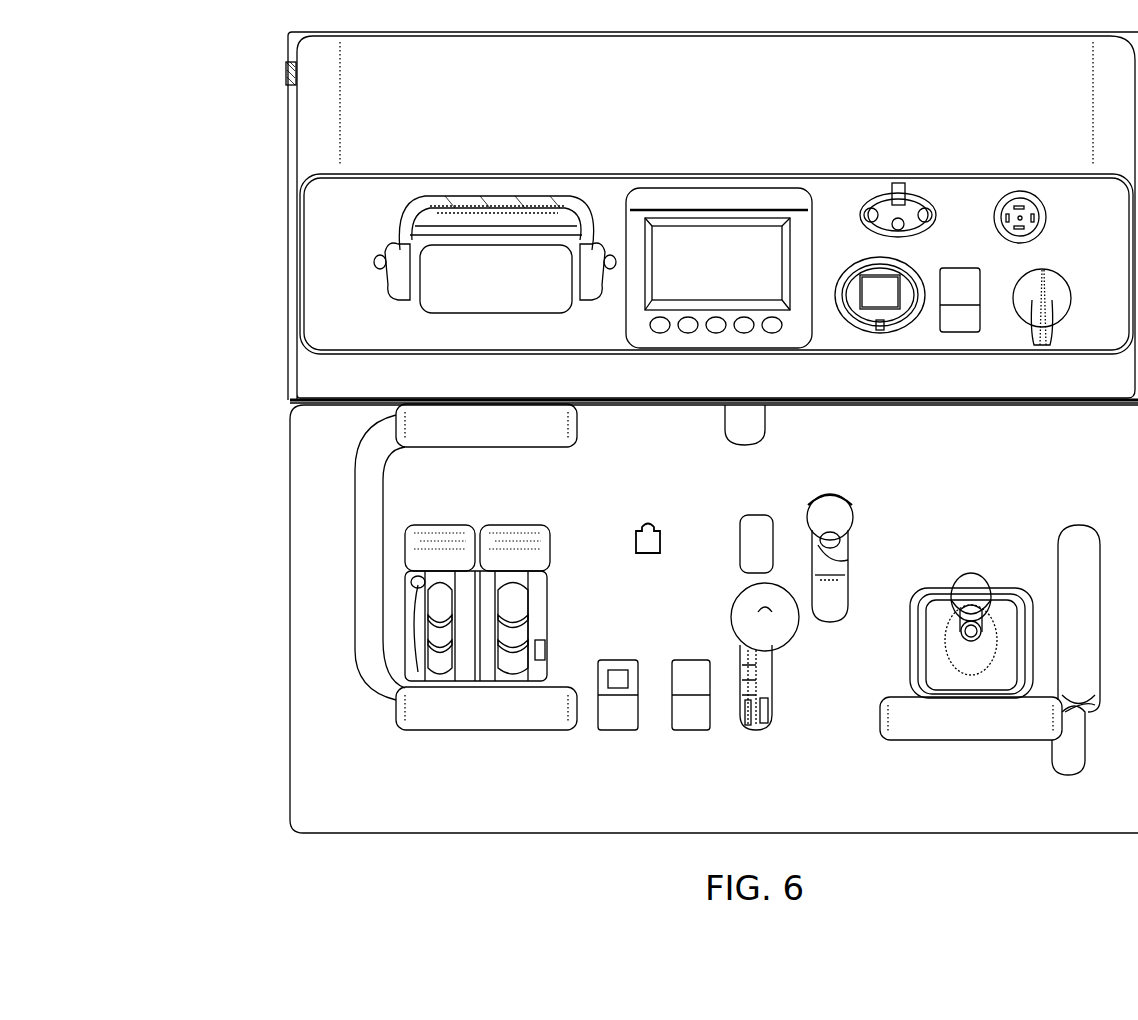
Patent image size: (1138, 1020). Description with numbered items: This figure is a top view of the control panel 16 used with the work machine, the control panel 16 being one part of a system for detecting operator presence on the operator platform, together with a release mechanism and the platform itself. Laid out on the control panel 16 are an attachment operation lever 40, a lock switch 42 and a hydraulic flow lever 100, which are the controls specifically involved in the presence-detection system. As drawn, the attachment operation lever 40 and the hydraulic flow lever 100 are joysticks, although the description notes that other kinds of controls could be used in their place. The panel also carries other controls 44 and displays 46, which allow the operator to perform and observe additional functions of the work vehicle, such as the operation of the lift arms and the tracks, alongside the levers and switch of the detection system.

The control panel 16 is at (246, 331).
The displays 46 is at (683, 242).
The other controls 44 is at (440, 548).
The lock switch 42 is at (752, 545).
The attachment operation lever 40 is at (765, 677).
The hydraulic flow lever 100 is at (833, 518).